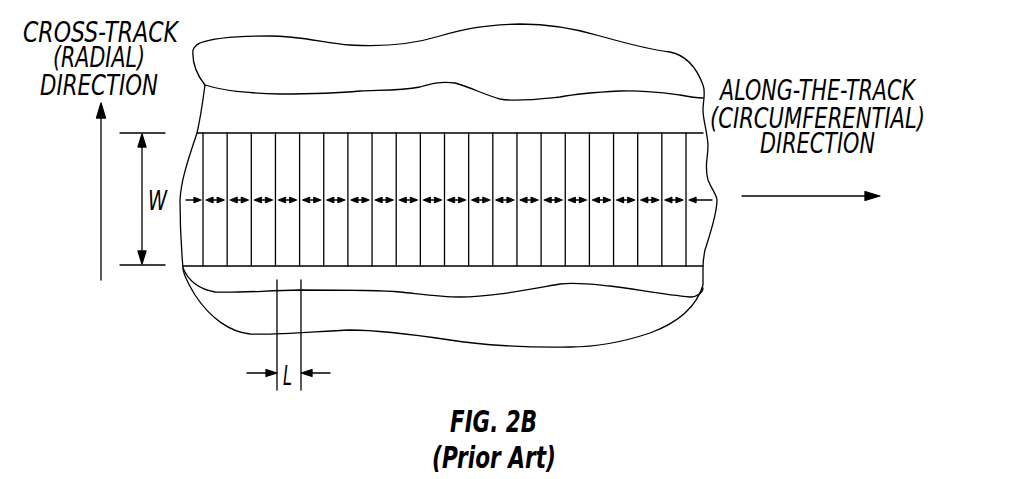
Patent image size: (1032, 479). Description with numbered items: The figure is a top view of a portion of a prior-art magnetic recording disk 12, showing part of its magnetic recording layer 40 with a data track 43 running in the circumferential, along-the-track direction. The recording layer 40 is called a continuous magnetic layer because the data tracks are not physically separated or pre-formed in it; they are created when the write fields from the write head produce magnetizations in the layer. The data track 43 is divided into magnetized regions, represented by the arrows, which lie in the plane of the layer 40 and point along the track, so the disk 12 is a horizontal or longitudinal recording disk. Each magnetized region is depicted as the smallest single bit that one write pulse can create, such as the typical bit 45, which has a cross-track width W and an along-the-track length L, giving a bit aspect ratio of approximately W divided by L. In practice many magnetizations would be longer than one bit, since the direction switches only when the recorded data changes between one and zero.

The disk 12 is at (543, 72).
The magnetic recording layer 40 is at (391, 91).
The typical bit 45 is at (288, 133).
The data track 43 is at (674, 267).